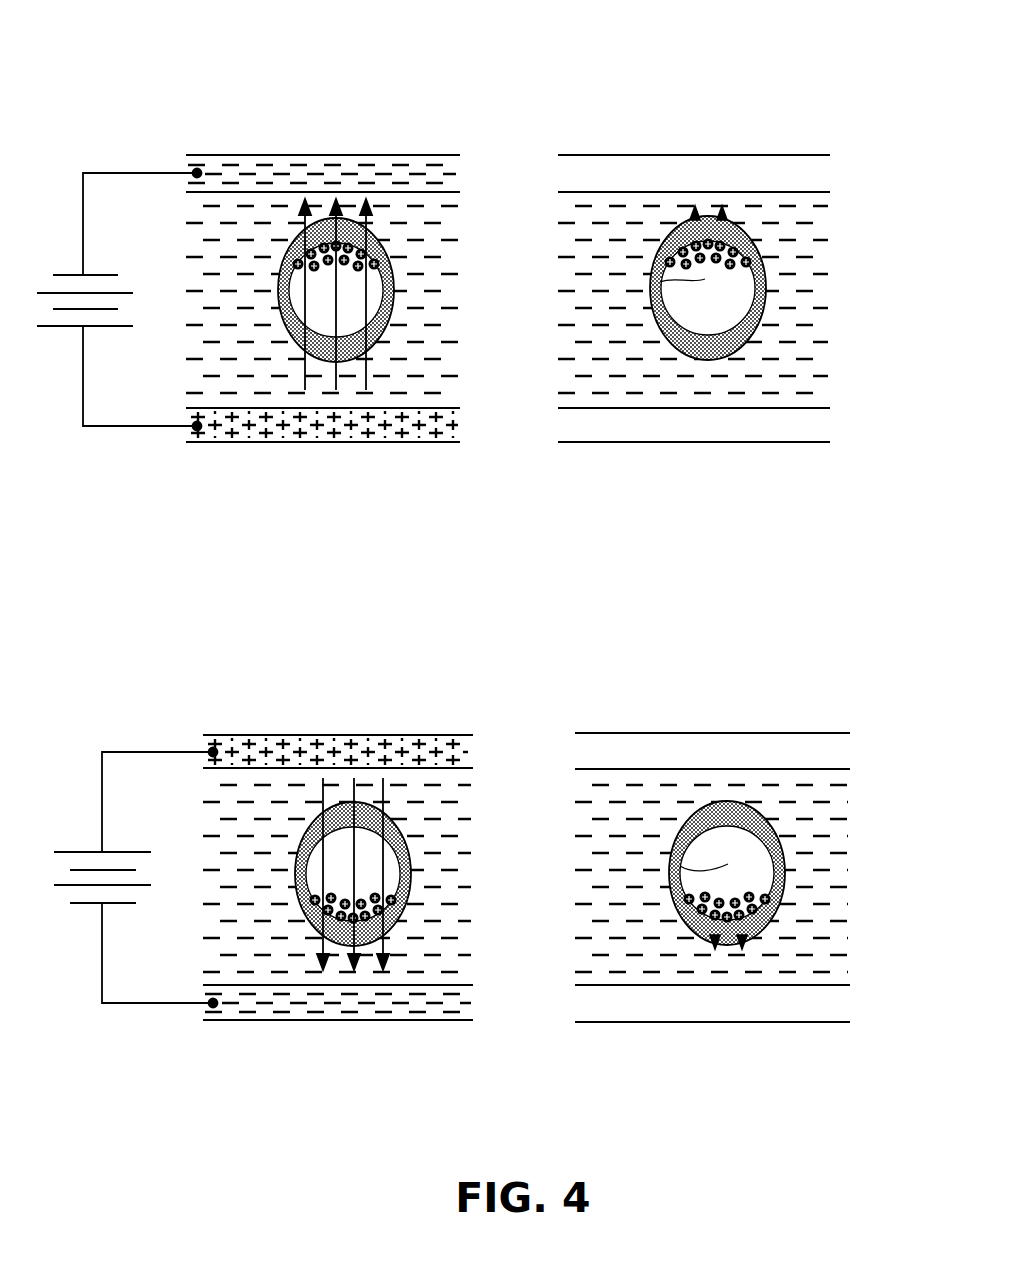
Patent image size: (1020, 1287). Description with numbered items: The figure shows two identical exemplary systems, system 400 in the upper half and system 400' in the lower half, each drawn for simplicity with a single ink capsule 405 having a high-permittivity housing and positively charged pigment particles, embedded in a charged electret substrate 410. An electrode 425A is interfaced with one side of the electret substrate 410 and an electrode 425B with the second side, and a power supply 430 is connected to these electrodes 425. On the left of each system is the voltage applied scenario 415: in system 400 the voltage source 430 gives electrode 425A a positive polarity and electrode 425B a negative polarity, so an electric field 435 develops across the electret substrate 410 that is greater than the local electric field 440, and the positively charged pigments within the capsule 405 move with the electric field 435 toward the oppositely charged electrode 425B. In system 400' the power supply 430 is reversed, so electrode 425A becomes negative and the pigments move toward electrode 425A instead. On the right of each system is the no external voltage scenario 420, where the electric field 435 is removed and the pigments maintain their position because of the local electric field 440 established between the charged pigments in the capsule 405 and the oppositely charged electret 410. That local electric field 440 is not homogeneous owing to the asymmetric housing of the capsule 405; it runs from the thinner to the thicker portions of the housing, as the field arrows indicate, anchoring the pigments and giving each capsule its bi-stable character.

The system 400 is at (505, 30).
The system 400' is at (519, 635).
The ink capsule 405 is at (394, 287).
The charged electret substrate 410 is at (537, 995).
The voltage applied scenario 415 is at (321, 386).
The no external voltage scenario 420 is at (703, 386).
The electrodes 425 is at (739, 588).
The electrode 425A is at (190, 442).
The electrode 425B is at (197, 155).
The power supply 430 is at (50, 332).
The electric field 435 is at (412, 1040).
The local electric field 440 is at (722, 208).